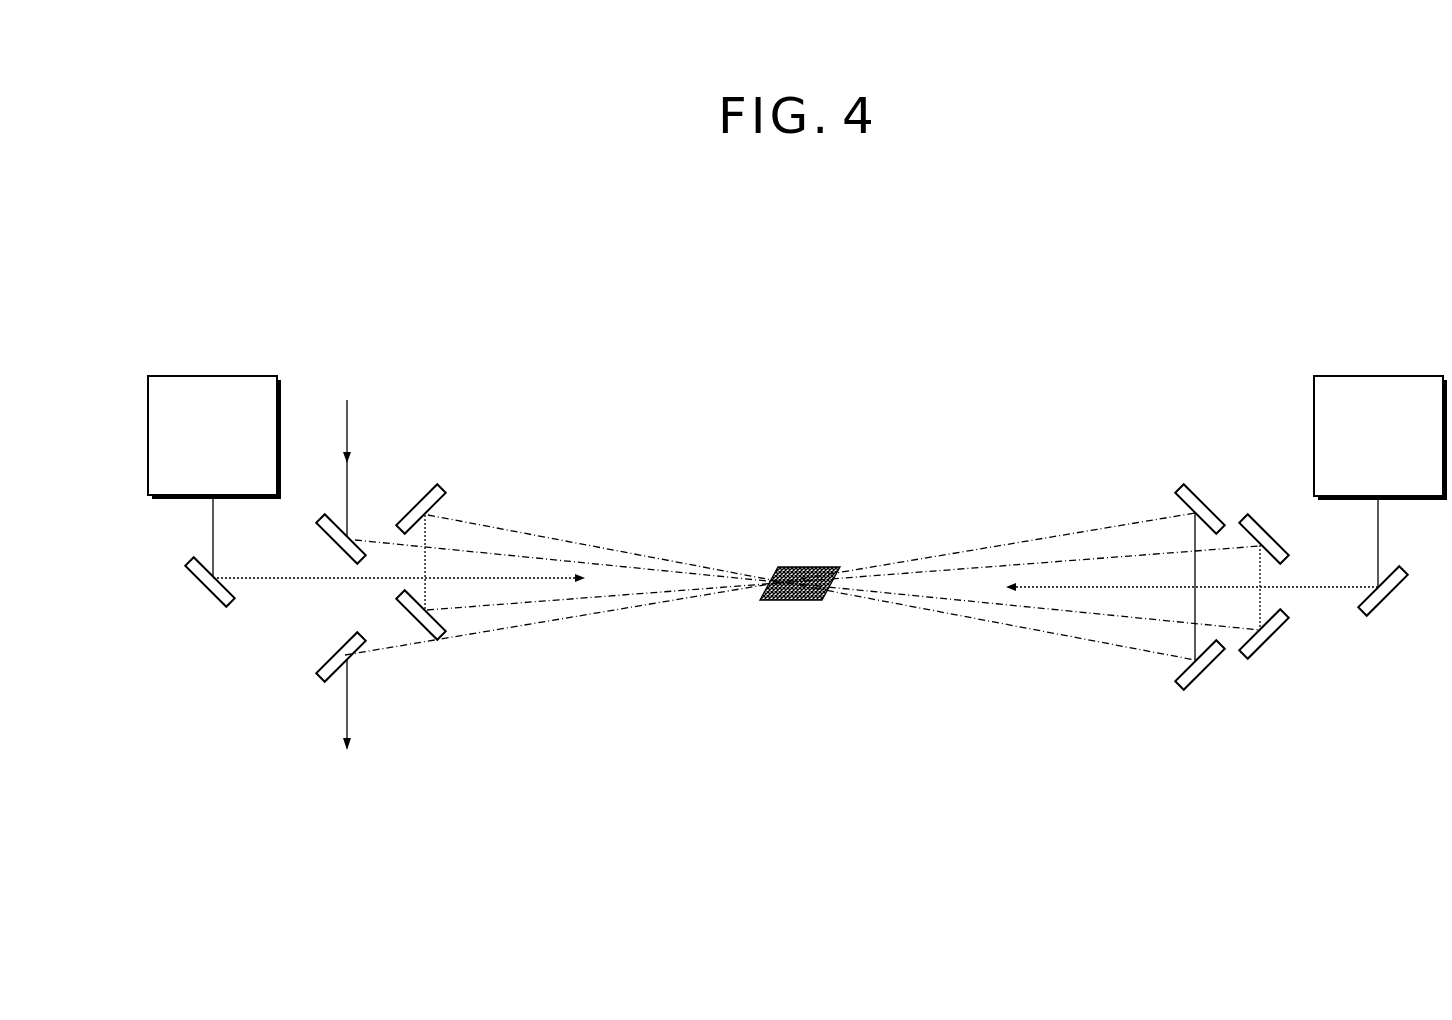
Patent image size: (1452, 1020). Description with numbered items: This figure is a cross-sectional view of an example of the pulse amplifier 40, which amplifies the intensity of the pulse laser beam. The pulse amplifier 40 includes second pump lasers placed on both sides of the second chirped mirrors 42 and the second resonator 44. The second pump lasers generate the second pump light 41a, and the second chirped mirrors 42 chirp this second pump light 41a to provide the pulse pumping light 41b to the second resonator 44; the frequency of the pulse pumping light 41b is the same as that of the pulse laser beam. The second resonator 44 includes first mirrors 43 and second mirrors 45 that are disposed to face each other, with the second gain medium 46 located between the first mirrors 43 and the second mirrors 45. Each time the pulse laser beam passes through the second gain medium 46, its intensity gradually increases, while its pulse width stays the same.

The pulse amplifier 40 is at (1279, 287).
The second pump light 41a is at (213, 521).
The pulse pumping light 41b is at (266, 578).
The second chirped mirrors 42 is at (201, 589).
The first mirrors 43 is at (415, 505).
The second resonator 44 is at (876, 534).
The second mirrors 45 is at (1201, 500).
The second gain medium 46 is at (815, 567).